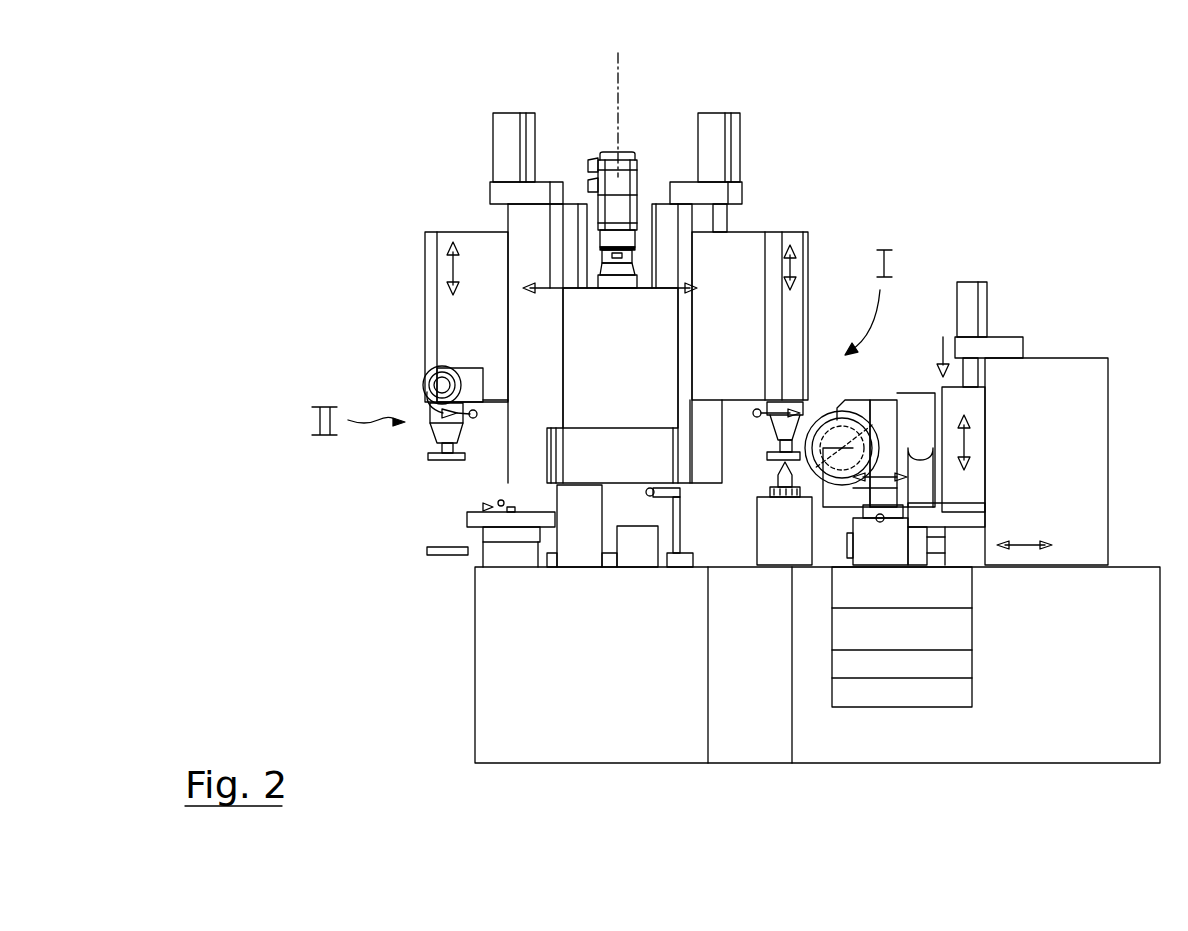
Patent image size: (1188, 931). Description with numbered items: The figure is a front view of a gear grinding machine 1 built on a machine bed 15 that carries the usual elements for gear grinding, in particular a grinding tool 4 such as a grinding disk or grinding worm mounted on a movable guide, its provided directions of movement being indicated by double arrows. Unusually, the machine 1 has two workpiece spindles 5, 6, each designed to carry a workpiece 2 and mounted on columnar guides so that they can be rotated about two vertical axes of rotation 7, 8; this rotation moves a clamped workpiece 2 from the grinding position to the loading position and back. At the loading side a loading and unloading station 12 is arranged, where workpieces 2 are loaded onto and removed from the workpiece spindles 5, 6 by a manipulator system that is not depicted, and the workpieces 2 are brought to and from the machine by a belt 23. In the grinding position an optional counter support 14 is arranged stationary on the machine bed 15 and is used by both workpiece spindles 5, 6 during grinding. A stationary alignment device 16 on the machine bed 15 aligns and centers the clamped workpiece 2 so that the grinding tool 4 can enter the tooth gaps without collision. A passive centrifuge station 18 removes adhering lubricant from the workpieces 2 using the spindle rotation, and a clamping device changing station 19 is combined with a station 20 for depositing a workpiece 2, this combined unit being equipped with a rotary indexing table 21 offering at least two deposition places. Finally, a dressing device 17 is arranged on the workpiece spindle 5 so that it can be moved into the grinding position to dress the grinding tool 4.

The gear grinding machine 1 is at (911, 94).
The workpiece 2 is at (432, 453).
The grinding tool 4 is at (830, 442).
The workpiece spindle 5 is at (463, 370).
The workpiece spindle 6 is at (770, 457).
The axis of rotation 7 is at (618, 84).
The axis of rotation 8 is at (662, 153).
The loading and unloading station 12 is at (388, 530).
The counter support 14 is at (785, 520).
The machine bed 15 is at (1113, 727).
The alignment device 16 is at (678, 523).
The dressing device 17 is at (417, 370).
The centrifuge station 18 is at (583, 530).
The clamping device changing station 19 is at (513, 542).
The station for depositing a workpiece 20 is at (402, 610).
The rotary indexing table 21 is at (467, 520).
The belt 23 is at (442, 552).